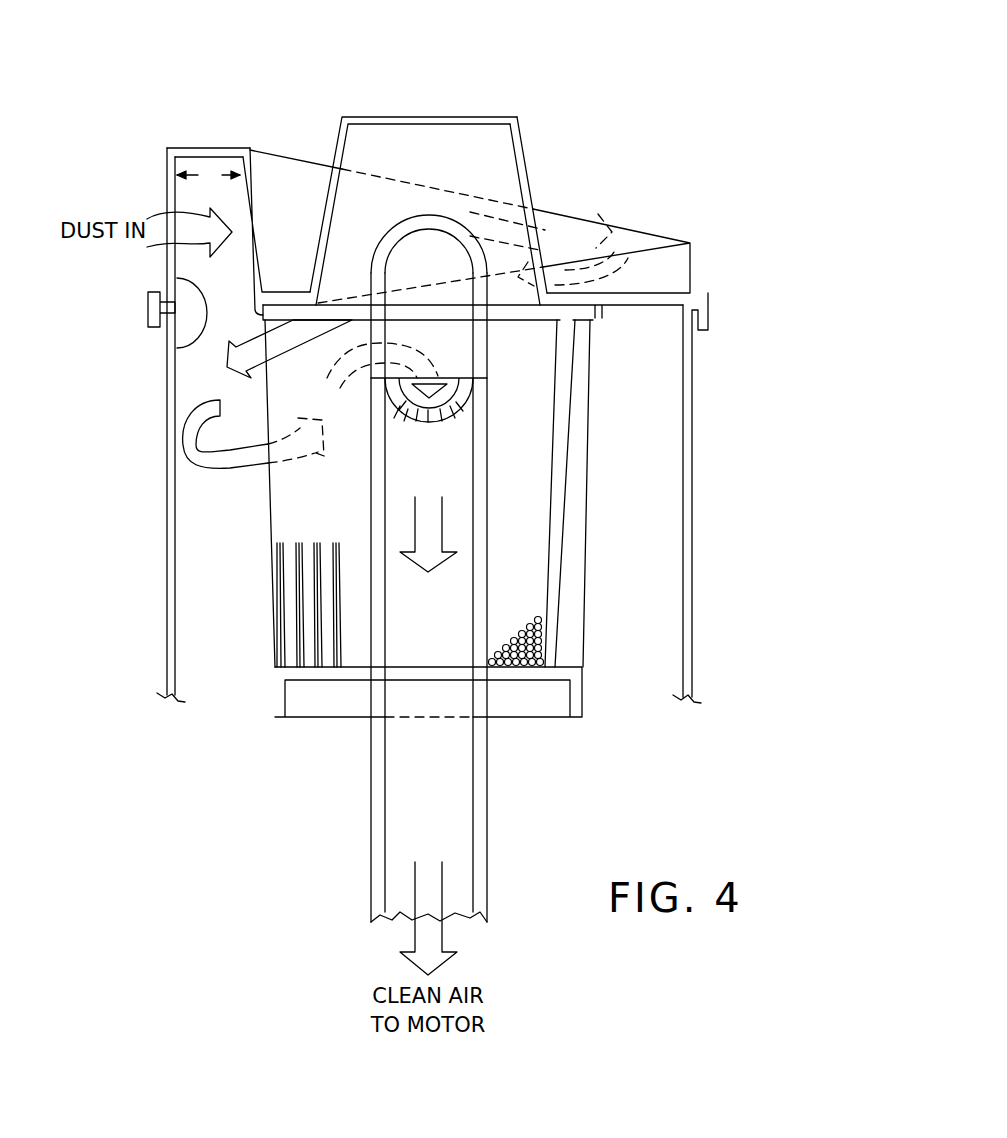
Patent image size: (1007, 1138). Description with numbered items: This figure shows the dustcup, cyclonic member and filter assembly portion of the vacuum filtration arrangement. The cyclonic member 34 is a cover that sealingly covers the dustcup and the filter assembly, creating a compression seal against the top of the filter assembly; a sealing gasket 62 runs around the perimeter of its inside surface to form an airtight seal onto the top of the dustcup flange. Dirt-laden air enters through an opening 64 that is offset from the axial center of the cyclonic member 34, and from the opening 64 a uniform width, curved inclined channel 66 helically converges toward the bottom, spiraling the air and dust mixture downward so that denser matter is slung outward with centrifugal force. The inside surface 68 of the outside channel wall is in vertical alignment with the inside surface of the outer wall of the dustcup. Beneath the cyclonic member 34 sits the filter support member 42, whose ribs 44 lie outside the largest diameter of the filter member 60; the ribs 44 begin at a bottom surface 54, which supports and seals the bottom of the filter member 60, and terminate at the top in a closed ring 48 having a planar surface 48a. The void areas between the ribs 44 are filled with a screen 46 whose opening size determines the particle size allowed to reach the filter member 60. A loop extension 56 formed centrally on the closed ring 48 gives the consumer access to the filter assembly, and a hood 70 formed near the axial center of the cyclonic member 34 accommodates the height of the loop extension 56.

The cyclonic member 34 is at (203, 148).
The curved inclined channel 66 is at (443, 181).
The hood 70 is at (517, 137).
The loop extension 56 is at (453, 217).
The planar surface 48a is at (497, 305).
The opening 64 is at (200, 197).
The sealing gasket 62 is at (160, 292).
The inside surface of the outside channel wall 68 is at (177, 355).
The closed ring 48 is at (580, 322).
The filter support member 42 is at (565, 468).
The ribs 44 is at (560, 535).
The screen 46 is at (548, 637).
The filter member 60 is at (297, 598).
The bottom surface 54 is at (492, 683).